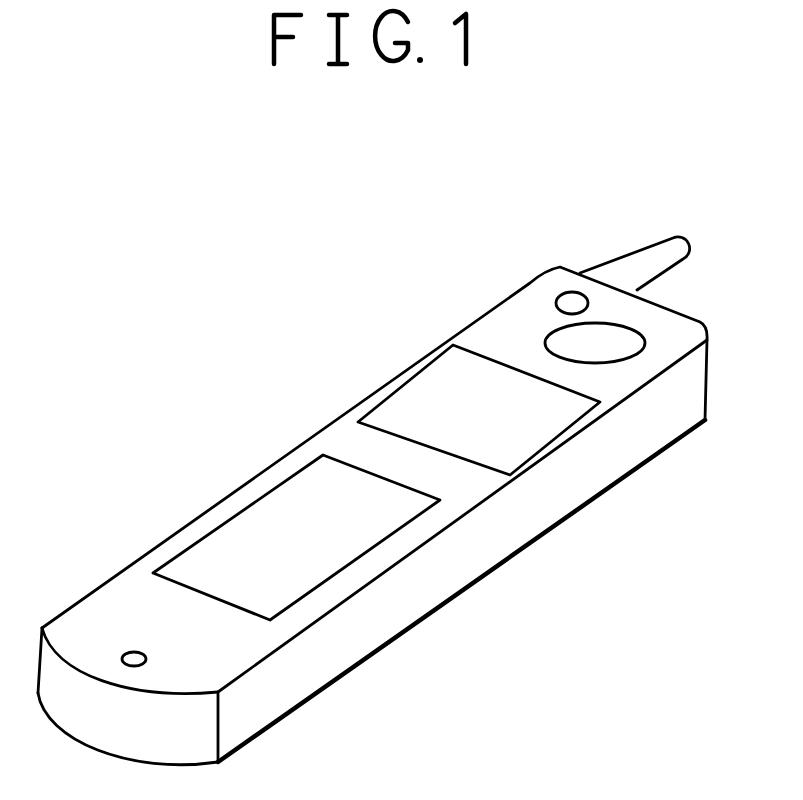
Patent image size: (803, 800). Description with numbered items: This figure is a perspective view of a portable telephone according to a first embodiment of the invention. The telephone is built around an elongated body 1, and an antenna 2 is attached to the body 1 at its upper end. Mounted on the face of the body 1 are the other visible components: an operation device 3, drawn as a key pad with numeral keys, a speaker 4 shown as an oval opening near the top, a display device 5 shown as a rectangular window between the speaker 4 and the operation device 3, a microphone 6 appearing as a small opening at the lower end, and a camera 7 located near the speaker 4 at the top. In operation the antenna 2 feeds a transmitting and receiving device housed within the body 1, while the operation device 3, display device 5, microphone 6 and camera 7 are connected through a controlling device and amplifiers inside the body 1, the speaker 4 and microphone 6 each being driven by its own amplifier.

The body 1 is at (477, 567).
The antenna 2 is at (621, 272).
The operation device 3 is at (357, 550).
The speaker 4 is at (637, 350).
The display device 5 is at (550, 433).
The microphone 6 is at (147, 660).
The camera 7 is at (562, 300).